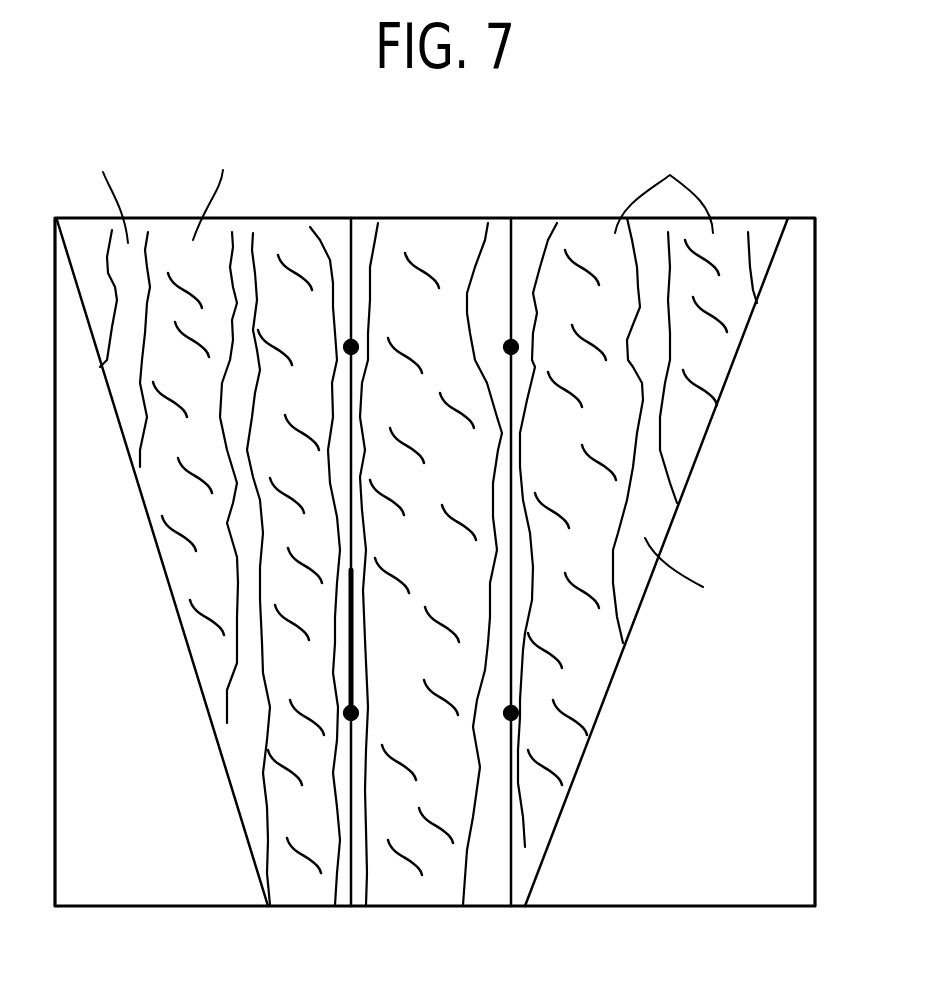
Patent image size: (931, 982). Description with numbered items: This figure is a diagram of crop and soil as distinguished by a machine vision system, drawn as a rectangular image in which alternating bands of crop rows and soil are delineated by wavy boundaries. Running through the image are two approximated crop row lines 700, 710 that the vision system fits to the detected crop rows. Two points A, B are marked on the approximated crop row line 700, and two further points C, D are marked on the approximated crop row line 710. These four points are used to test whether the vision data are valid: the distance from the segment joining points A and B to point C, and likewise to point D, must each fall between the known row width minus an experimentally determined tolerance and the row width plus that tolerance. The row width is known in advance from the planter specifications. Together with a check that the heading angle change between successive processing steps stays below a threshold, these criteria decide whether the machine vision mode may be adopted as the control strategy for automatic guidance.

The approximated crop row line 700 is at (512, 880).
The approximated crop row line 710 is at (352, 237).
The point A is at (515, 343).
The point B is at (514, 716).
The point C is at (345, 346).
The point D is at (351, 713).